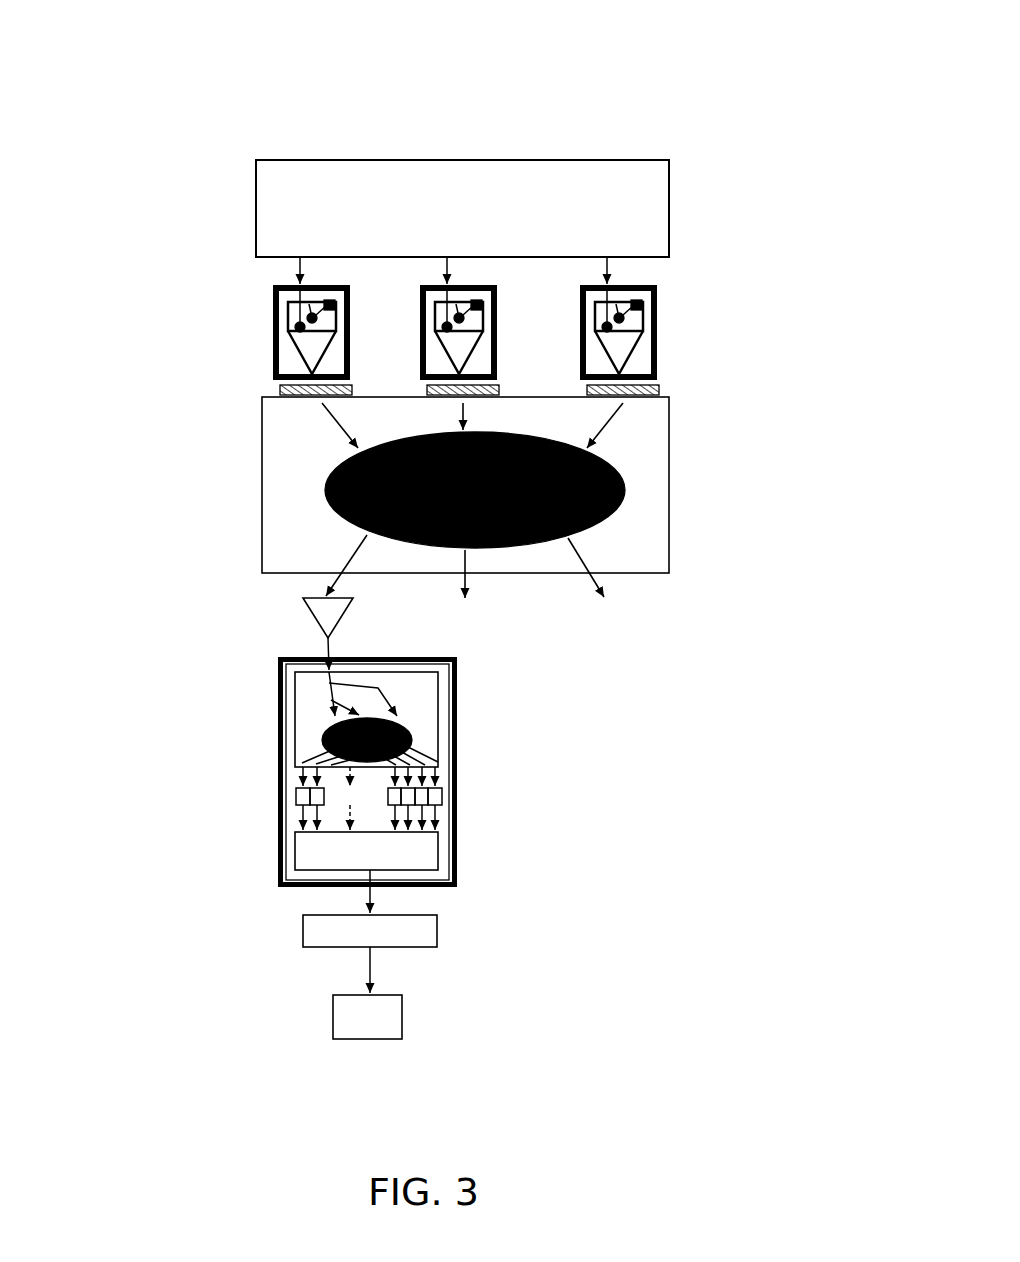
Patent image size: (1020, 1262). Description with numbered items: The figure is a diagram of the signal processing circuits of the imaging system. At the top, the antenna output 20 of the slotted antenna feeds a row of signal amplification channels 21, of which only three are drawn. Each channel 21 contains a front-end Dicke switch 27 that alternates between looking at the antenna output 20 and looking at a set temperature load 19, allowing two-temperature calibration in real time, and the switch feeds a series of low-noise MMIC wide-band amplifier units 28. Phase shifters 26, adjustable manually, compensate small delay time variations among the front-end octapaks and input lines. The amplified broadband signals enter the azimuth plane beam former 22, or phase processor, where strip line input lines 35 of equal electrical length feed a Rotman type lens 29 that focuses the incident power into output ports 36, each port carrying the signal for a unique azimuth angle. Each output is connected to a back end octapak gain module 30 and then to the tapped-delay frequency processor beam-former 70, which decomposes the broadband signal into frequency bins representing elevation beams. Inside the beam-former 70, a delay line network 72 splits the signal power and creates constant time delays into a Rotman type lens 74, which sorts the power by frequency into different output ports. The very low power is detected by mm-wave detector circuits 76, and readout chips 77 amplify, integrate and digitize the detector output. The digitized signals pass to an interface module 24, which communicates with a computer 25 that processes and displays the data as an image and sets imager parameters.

The antenna output 20 is at (555, 160).
The signal amplification channel 21 is at (477, 358).
The front-end Dicke switch 27 is at (283, 320).
The low-noise MMIC wide-band amplifier unit 28 is at (297, 348).
The set temperature load 19 is at (340, 310).
The phase shifter 26 is at (277, 395).
The azimuth plane beam former 22 is at (763, 477).
The Rotman type lens 29 is at (330, 488).
The strip line input line 35 is at (607, 417).
The output port 36 is at (600, 547).
The back end octapak gain module 30 is at (310, 613).
The tapped-delay frequency processor beam-former 70 is at (334, 775).
The delay line network 72 is at (317, 693).
The Rotman type lens 74 is at (412, 732).
The mm-wave detector circuit 76 is at (442, 790).
The readout chip 77 is at (432, 851).
The interface module 24 is at (303, 935).
The computer 25 is at (333, 1025).